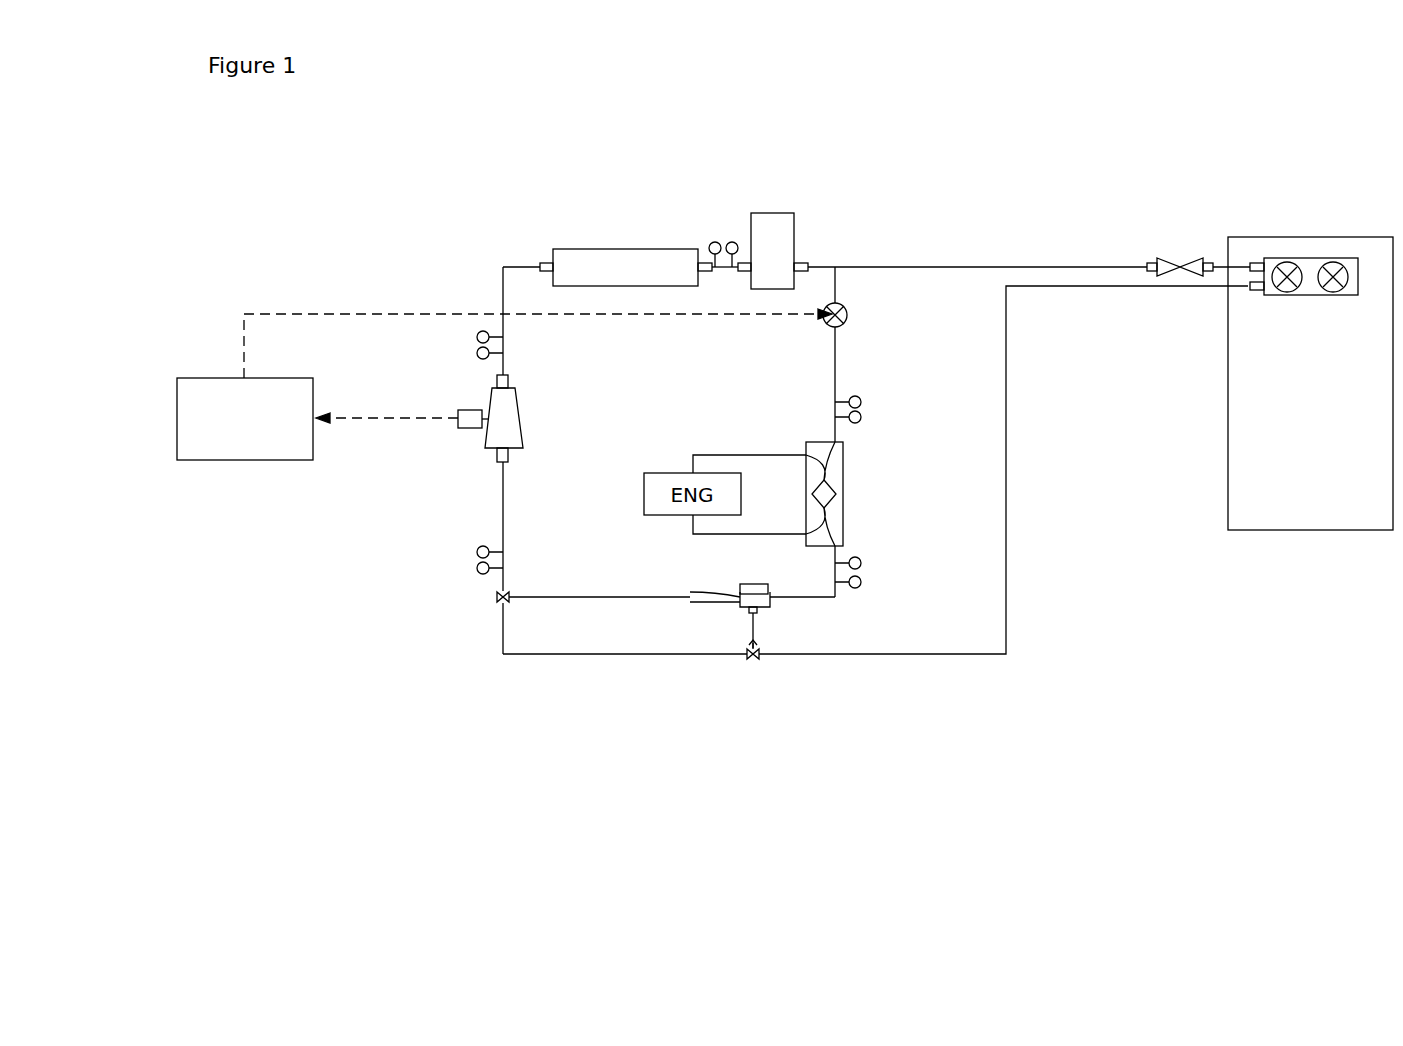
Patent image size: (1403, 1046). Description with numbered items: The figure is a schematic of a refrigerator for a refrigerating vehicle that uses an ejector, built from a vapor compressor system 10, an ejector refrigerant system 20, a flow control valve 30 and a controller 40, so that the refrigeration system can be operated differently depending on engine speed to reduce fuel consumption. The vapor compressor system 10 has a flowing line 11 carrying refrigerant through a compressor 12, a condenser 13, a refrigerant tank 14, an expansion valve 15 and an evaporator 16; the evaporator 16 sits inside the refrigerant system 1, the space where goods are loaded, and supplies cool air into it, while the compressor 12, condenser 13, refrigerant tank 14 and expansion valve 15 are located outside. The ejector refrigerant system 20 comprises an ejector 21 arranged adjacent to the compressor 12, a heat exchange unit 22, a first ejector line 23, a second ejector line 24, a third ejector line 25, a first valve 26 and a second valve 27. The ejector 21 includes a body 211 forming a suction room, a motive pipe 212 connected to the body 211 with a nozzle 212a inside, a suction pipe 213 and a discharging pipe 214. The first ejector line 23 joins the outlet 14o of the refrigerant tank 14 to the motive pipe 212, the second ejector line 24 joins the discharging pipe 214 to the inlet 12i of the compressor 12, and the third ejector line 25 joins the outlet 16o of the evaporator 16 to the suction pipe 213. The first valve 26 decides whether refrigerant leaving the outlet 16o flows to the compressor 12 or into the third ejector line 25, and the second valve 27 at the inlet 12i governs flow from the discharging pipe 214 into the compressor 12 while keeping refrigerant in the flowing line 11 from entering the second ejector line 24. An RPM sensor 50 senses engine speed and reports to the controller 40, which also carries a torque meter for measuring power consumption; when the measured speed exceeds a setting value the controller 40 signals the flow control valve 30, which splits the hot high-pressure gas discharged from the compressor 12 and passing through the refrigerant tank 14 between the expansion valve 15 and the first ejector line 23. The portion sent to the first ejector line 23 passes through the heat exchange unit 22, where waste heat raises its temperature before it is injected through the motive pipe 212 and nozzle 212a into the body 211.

The refrigerant system 1 is at (1227, 428).
The vapor compressor system 10 is at (1112, 240).
The flowing line 11 is at (930, 265).
The compressor 12 is at (510, 426).
The inlet of the compressor 12i is at (510, 462).
The condenser 13 is at (622, 255).
The refrigerant tank 14 is at (773, 218).
The outlet of the refrigerant tank 14o is at (802, 263).
The expansion valve 15 is at (1180, 259).
The evaporator 16 is at (1303, 258).
The outlet of the evaporator 16o is at (1256, 290).
The ejector refrigerant system 20 is at (590, 625).
The ejector 21 is at (732, 624).
The body 211 is at (742, 608).
The motive pipe 212 is at (778, 602).
The nozzle 212a is at (746, 592).
The suction pipe 213 is at (758, 614).
The discharging pipe 214 is at (690, 603).
The heat exchange unit 22 is at (844, 492).
The first ejector line 23 is at (838, 360).
The second ejector line 24 is at (550, 597).
The third ejector line 25 is at (762, 635).
The first valve 26 is at (752, 660).
The second valve 27 is at (498, 598).
The flow control valve 30 is at (848, 314).
The controller 40 is at (251, 445).
The RPM sensor 50 is at (470, 429).